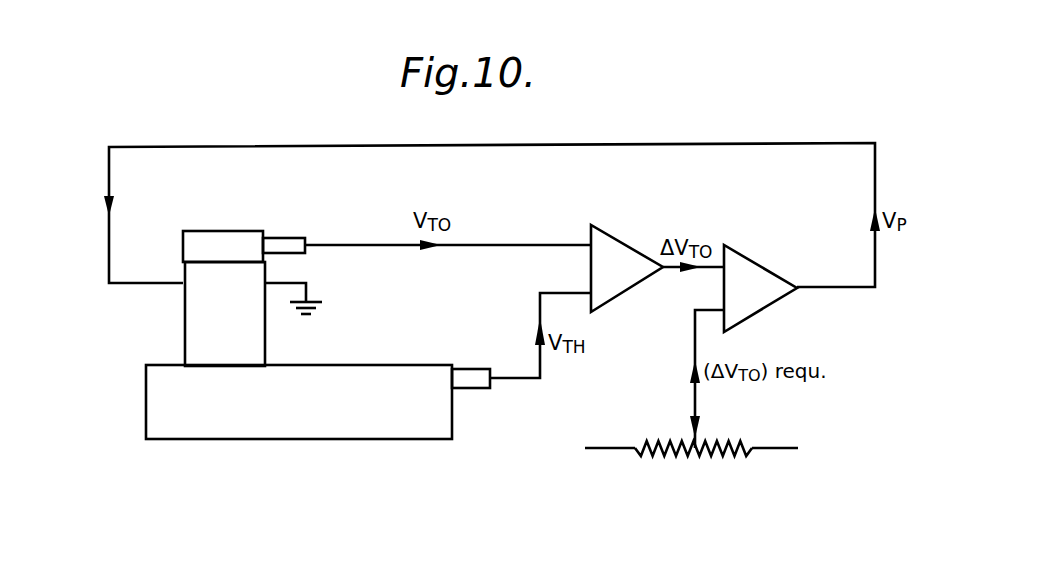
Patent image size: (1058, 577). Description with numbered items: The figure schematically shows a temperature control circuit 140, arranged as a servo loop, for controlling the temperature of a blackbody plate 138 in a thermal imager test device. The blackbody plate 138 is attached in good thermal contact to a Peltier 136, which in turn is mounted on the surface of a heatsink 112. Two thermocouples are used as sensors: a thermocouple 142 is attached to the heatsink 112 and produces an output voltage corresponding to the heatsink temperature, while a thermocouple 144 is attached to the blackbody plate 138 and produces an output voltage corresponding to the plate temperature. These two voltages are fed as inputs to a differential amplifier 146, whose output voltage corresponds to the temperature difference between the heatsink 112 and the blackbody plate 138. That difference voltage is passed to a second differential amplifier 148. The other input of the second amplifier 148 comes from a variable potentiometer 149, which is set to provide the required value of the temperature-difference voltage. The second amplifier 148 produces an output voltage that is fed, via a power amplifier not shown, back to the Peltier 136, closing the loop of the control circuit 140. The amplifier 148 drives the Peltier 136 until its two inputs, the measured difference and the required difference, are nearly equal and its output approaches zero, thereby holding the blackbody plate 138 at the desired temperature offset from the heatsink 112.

The temperature control circuit 140 is at (146, 128).
The blackbody plate 138 is at (220, 240).
The thermocouple 144 is at (285, 240).
The Peltier 136 is at (202, 305).
The heatsink 112 is at (157, 399).
The thermocouple 142 is at (473, 390).
The differential amplifier 146 is at (628, 257).
The second differential amplifier 148 is at (757, 268).
The variable potentiometer 149 is at (620, 452).